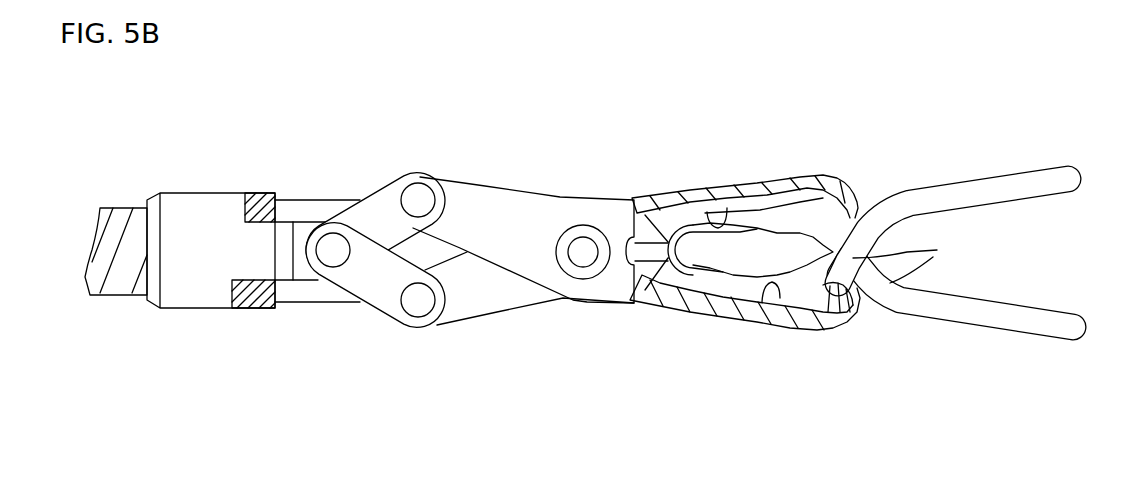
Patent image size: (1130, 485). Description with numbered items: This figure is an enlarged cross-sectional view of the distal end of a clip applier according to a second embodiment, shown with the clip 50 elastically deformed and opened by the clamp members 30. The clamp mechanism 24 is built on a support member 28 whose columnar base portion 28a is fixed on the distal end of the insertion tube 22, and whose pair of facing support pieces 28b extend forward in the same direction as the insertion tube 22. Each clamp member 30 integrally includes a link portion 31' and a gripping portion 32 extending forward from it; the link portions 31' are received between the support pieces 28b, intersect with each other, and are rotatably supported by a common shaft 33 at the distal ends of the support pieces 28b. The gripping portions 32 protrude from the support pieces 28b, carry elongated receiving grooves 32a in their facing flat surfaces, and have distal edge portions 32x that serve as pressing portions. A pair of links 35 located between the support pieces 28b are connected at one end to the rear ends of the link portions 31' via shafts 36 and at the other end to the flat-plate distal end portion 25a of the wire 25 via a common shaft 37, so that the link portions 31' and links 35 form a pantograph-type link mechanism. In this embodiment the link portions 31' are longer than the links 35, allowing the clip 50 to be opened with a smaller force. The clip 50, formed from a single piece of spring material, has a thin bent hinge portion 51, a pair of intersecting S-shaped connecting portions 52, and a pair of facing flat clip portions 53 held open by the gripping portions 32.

The insertion tube 22 is at (123, 206).
The clamp mechanism 24 is at (597, 160).
The wire 25 is at (244, 258).
The distal end portion of the wire 25a is at (305, 282).
The support member 28 is at (247, 216).
The base portion 28a is at (195, 193).
The support pieces 28b is at (312, 198).
The clamp members 30 is at (606, 198).
The link portions 31' is at (517, 262).
The gripping portions 32 is at (752, 182).
The receiving grooves 32a is at (723, 226).
The distal edge portions 32x is at (860, 212).
The common shaft 33 is at (588, 258).
The links 35 is at (360, 214).
The shafts 36 is at (415, 190).
The common shaft 37 is at (335, 252).
The clip 50 is at (883, 236).
The hinge portion 51 is at (645, 233).
The connecting portions 52 is at (930, 252).
The clip portions 53 is at (941, 171).